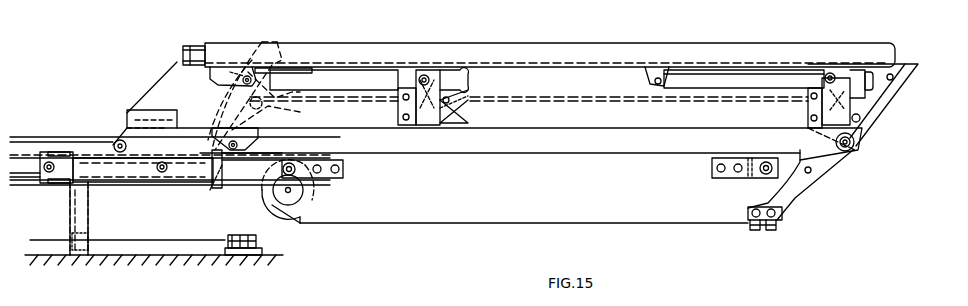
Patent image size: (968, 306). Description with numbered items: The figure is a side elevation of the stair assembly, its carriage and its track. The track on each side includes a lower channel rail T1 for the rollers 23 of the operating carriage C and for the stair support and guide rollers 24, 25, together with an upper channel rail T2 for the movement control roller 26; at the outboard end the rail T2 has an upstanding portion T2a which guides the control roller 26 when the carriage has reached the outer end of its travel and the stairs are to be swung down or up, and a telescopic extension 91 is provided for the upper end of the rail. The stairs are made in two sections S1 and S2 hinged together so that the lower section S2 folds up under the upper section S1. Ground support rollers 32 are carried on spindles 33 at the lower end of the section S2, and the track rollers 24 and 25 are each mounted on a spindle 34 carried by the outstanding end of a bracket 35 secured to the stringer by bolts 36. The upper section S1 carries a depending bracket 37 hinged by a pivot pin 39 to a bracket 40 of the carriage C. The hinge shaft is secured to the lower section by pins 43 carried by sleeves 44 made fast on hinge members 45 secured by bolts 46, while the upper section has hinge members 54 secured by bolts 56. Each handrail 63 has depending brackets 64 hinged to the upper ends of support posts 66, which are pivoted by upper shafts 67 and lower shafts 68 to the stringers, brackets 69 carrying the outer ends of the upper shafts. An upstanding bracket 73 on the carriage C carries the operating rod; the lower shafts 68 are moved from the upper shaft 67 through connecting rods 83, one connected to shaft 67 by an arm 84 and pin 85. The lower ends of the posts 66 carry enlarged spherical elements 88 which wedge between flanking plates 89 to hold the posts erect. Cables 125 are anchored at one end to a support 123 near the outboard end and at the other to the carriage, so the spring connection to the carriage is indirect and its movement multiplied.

The upstanding portion T2a is at (268, 40).
The telescopic extension 91 is at (193, 44).
The support post 66 is at (373, 68).
The upper shaft 67 is at (427, 74).
The handrail 63 is at (792, 42).
The lower shaft 68 is at (832, 72).
The spherical element 88 is at (470, 85).
The connecting rod 83 is at (577, 90).
The depending bracket 64 is at (222, 82).
The bolt 56 is at (894, 78).
The hinge member 54 is at (870, 108).
The flanking plate 89 is at (424, 126).
The arm 84 is at (398, 106).
The pin 85 is at (452, 104).
The upper bracket 69 is at (444, 126).
The upper section S1 is at (575, 120).
The lower section S2 is at (579, 202).
The upper channel rail T2 is at (56, 136).
The movement control roller 26 is at (118, 140).
The upstanding bracket 73 is at (250, 112).
The depending bracket 37 is at (260, 138).
The pivot pin 39 is at (246, 150).
The spindle 34 is at (300, 164).
The bracket 35 is at (345, 172).
The bolt 36 is at (335, 175).
The track roller 25 is at (312, 190).
The spindle 33 is at (284, 192).
The ground support roller 32 is at (276, 212).
The bracket 40 is at (232, 176).
The lower channel rail T1 is at (16, 188).
The roller 23 is at (42, 184).
The operating carriage C is at (140, 190).
The cable 125 is at (166, 246).
The support 123 is at (264, 245).
The track roller 24 is at (775, 165).
The pin 43 is at (855, 148).
The sleeve 44 is at (840, 152).
The bolt 46 is at (812, 172).
The hinge member 45 is at (790, 208).